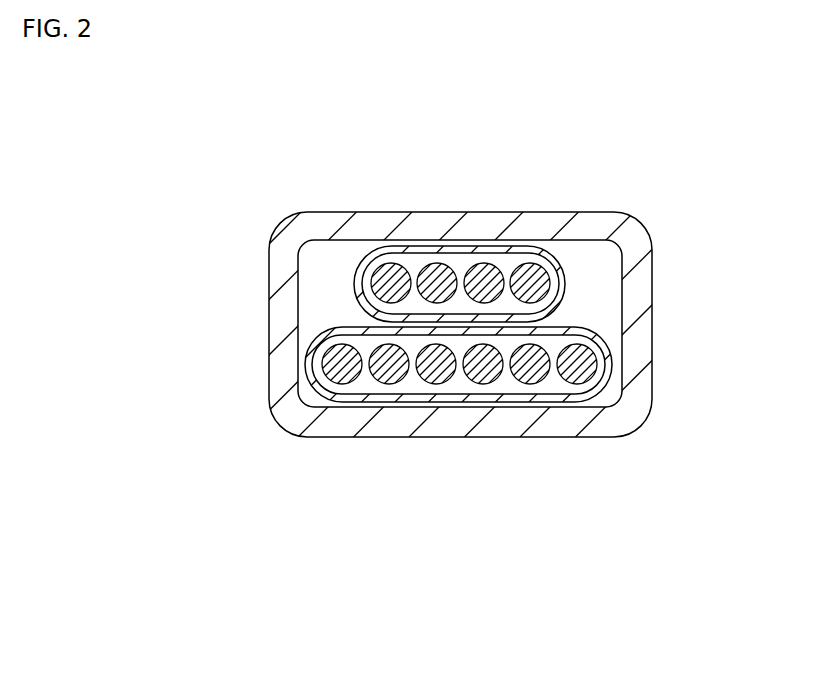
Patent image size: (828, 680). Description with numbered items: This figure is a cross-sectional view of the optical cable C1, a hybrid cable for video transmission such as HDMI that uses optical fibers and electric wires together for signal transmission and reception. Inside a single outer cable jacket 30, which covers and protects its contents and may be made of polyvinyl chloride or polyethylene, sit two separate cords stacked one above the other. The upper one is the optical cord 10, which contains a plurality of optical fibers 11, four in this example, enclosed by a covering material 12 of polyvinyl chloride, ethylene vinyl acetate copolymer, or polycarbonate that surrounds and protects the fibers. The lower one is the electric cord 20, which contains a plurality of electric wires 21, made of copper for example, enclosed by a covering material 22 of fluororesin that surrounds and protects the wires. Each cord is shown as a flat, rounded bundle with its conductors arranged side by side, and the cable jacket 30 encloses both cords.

The optical cable C1 is at (266, 177).
The cable jacket 30 is at (636, 224).
The optical cord 10 is at (570, 290).
The optical fiber 11 is at (472, 262).
The covering material 12 is at (541, 246).
The electric cord 20 is at (607, 333).
The electric wire 21 is at (375, 378).
The covering material 22 is at (602, 395).